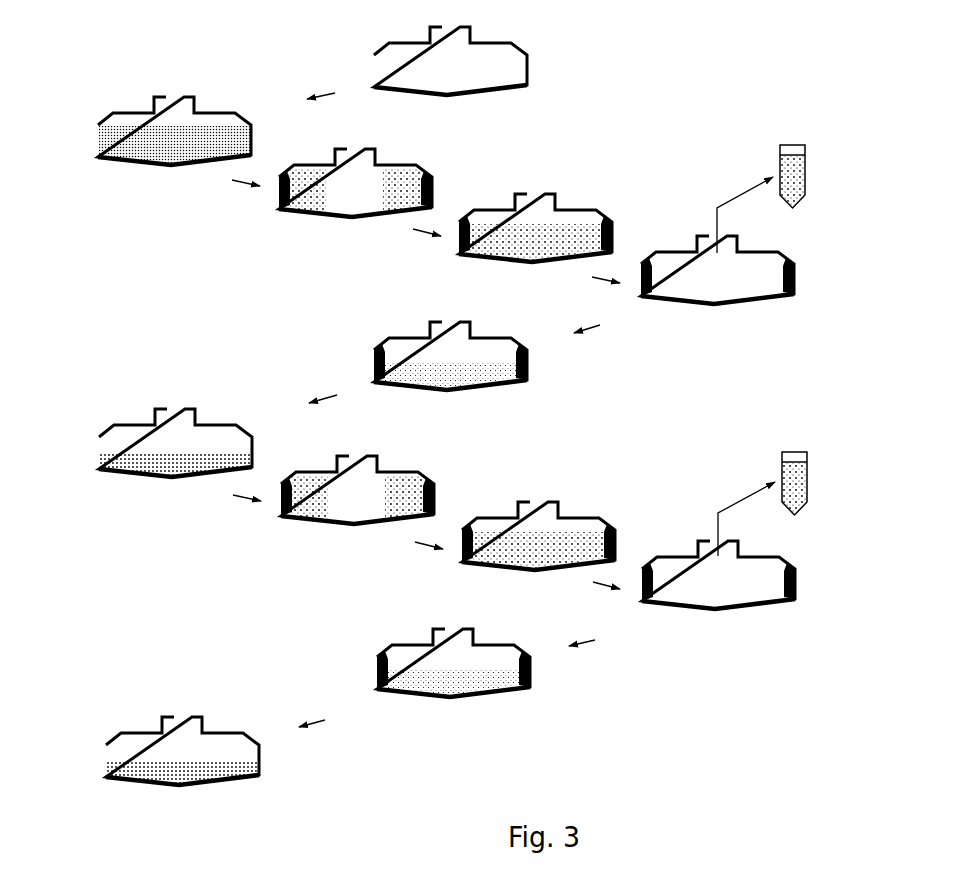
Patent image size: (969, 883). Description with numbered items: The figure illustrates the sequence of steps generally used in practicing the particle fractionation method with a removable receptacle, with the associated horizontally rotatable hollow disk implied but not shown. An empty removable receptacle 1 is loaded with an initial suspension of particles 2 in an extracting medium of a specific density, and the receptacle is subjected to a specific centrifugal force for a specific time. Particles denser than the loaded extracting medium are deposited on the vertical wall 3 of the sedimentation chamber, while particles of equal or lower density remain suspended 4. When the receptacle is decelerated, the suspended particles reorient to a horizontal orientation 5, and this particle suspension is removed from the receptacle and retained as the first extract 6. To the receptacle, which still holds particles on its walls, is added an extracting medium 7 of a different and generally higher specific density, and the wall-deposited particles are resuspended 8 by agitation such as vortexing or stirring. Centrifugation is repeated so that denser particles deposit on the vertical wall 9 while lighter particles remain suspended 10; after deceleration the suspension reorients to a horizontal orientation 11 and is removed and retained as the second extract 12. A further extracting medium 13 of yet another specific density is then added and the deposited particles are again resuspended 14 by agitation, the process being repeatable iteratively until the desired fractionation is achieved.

The empty removable receptacle 1 is at (536, 67).
The initial suspension of particles 2 is at (106, 138).
The vertical wall of the sedimentation chamber 3 is at (280, 201).
The suspended particles 4 is at (309, 202).
The horizontal orientation 5 is at (591, 205).
The first extract 6 is at (806, 170).
The extracting medium 7 is at (484, 374).
The resuspended particles 8 is at (109, 455).
The vertical wall of the sedimentation chamber 9 is at (281, 510).
The suspended particles 10 is at (304, 511).
The horizontal orientation 11 is at (594, 510).
The second extract 12 is at (800, 489).
The extracting medium 13 is at (487, 681).
The resuspended particles 14 is at (119, 765).